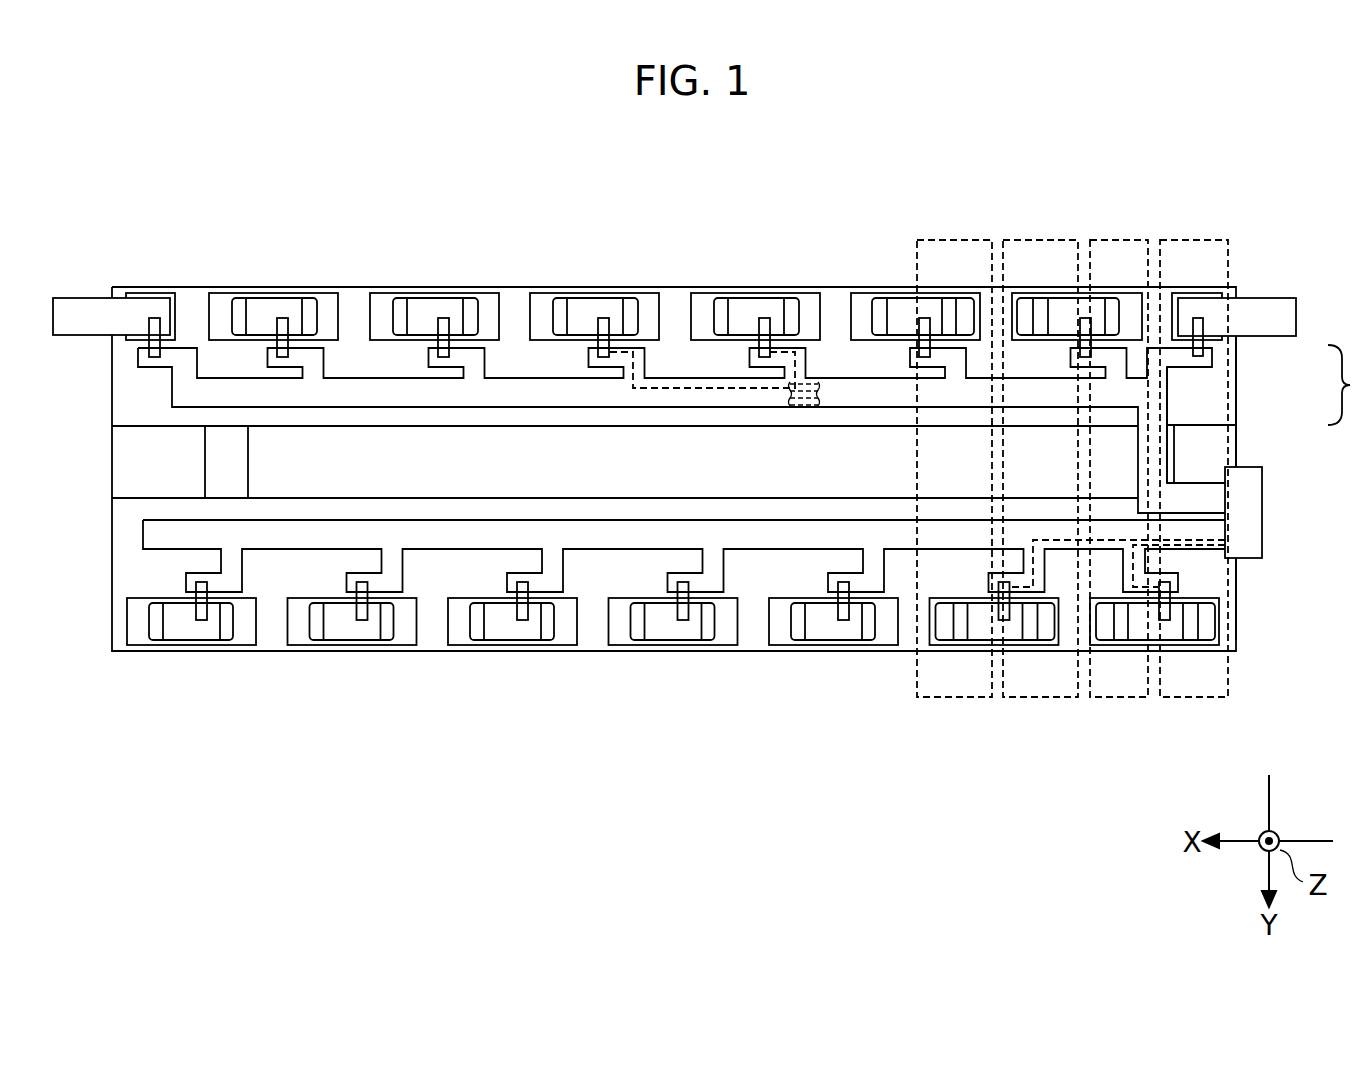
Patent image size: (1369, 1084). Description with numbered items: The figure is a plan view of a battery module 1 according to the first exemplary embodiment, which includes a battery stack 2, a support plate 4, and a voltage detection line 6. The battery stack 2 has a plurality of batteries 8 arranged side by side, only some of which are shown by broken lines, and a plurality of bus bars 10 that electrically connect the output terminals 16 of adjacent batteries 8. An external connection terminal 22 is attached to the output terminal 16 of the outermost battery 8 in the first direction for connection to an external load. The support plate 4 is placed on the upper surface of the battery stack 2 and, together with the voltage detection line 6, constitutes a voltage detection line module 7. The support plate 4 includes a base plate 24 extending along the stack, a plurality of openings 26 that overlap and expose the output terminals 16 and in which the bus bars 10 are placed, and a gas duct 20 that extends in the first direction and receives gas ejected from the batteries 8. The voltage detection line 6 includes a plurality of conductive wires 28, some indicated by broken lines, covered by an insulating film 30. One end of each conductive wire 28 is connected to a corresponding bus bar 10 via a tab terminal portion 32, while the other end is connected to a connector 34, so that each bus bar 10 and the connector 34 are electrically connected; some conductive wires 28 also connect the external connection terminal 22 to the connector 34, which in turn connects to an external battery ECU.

The battery module 1 is at (703, 474).
The battery stack 2 is at (1041, 240).
The support plate 4 is at (1238, 403).
The voltage detection line 6 is at (1170, 385).
The voltage detection line module 7 is at (1348, 385).
The battery 8 is at (1042, 700).
The bus bar 10 is at (874, 305).
The output terminal 16 is at (945, 643).
The gas duct 20 is at (1215, 455).
The external connection terminal 22 is at (76, 298).
The base plate 24 is at (110, 528).
The opening 26 is at (293, 625).
The conductive wire 28 is at (666, 388).
The insulating film 30 is at (700, 380).
The tab terminal portion 32 is at (603, 318).
The connector 34 is at (1258, 512).